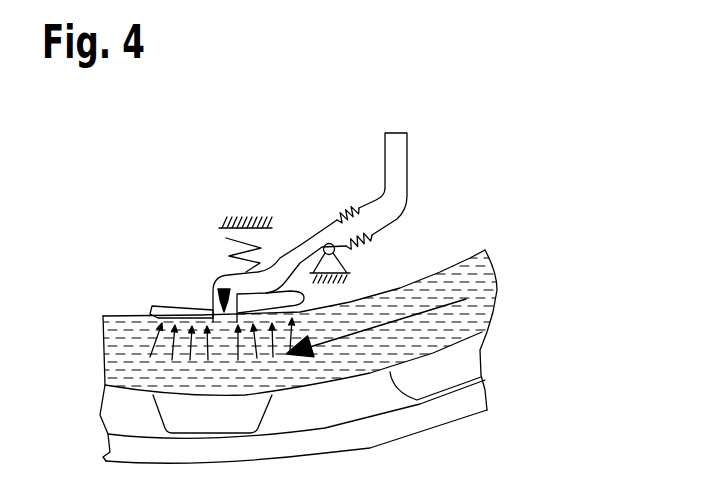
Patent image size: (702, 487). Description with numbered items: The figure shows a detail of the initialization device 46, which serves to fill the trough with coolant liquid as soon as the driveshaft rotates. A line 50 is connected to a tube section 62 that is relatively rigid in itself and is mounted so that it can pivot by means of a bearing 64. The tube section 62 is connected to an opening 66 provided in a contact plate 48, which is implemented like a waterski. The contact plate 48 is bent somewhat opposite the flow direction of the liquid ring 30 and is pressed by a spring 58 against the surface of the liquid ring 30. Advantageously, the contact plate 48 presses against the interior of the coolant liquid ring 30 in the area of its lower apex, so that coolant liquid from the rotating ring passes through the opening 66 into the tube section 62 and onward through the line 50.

The liquid ring 30 is at (475, 313).
The initialization device 46 is at (282, 209).
The contact plate 48 is at (155, 306).
The line 50 is at (398, 163).
The spring 58 is at (226, 240).
The tube section 62 is at (303, 247).
The bearing 64 is at (335, 264).
The opening 66 is at (216, 316).